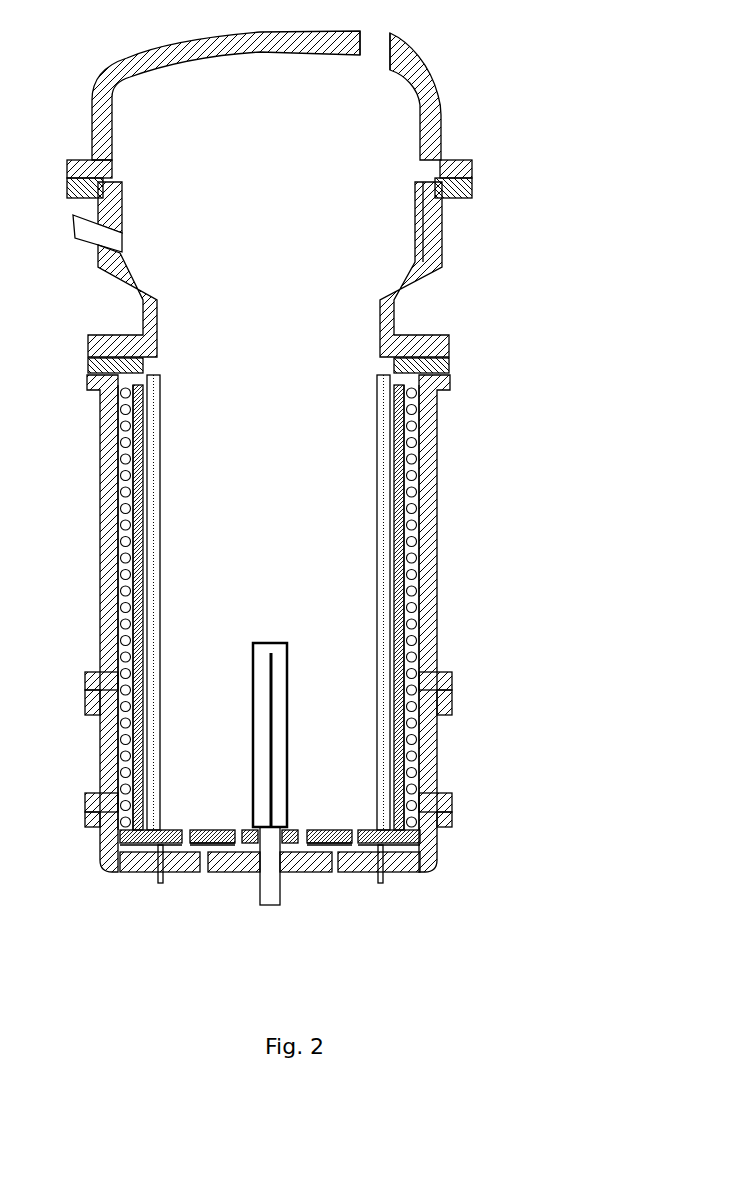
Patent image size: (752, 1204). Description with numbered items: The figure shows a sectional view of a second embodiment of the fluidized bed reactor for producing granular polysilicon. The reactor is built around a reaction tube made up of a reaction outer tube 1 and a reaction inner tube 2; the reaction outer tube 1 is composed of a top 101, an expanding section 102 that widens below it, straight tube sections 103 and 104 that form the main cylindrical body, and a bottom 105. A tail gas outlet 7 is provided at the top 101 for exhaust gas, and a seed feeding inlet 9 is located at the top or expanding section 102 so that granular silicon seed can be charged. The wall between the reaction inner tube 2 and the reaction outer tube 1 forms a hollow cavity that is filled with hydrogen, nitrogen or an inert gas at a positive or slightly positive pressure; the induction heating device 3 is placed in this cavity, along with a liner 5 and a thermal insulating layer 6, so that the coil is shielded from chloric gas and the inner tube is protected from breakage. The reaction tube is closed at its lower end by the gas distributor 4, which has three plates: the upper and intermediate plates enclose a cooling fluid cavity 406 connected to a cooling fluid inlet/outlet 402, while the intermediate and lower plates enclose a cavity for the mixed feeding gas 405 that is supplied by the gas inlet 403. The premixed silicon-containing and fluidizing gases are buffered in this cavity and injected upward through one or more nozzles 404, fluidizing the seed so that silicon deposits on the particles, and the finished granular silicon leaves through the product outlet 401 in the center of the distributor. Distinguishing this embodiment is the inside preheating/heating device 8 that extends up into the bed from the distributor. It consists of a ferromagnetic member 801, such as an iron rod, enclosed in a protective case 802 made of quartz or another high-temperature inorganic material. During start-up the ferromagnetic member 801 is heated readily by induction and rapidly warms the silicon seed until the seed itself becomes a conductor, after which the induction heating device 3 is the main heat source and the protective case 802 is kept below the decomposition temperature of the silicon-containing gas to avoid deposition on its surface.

The reaction outer tube 1 is at (308, 190).
The top 101 is at (443, 118).
The expanding section 102 is at (440, 288).
The straight tube section 103 is at (306, 623).
The straight tube section 104 is at (437, 755).
The bottom 105 is at (440, 853).
The reaction inner tube 2 is at (392, 458).
The induction heating device 3 is at (415, 563).
The gas distributor 4 is at (339, 884).
The product outlet 401 is at (270, 907).
The cooling fluid inlet/outlet 402 is at (380, 883).
The gas inlet 403 is at (205, 870).
The nozzle 404 is at (360, 823).
The cavity for the mixed feeding gas 405 is at (230, 847).
The cooling fluid cavity 406 is at (313, 845).
The liner 5 is at (385, 630).
The thermal insulating layer 6 is at (288, 700).
The tail gas outlet 7 is at (388, 45).
The inside preheating/heating device 8 is at (415, 732).
The ferromagnetic member 801 is at (383, 753).
The protective case 802 is at (288, 752).
The seed feeding inlet 9 is at (82, 243).